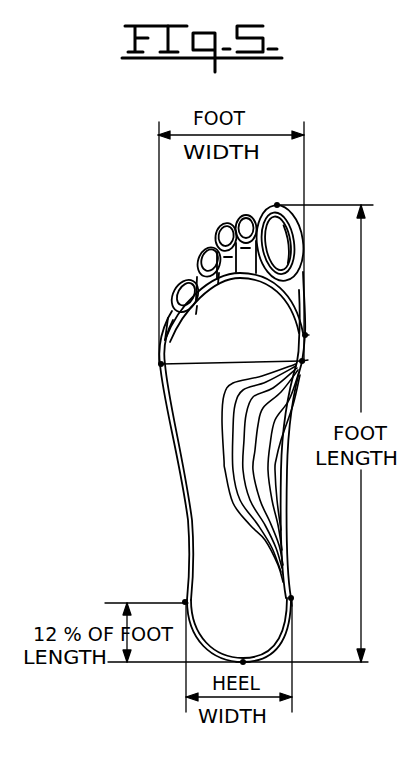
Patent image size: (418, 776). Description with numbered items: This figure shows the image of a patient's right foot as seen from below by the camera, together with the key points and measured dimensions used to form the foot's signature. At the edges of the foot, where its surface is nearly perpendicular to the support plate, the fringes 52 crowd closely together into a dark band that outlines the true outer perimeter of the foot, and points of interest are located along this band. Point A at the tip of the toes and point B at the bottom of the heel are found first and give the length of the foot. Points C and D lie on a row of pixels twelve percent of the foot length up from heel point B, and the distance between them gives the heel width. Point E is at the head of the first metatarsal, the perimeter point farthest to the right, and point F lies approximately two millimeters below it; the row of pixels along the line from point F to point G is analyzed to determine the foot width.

The fringes 52 is at (255, 480).
The point A is at (323, 194).
The point B is at (244, 651).
The point C is at (146, 591).
The point D is at (300, 596).
The point E is at (313, 336).
The point F is at (311, 361).
The point G is at (219, 366).